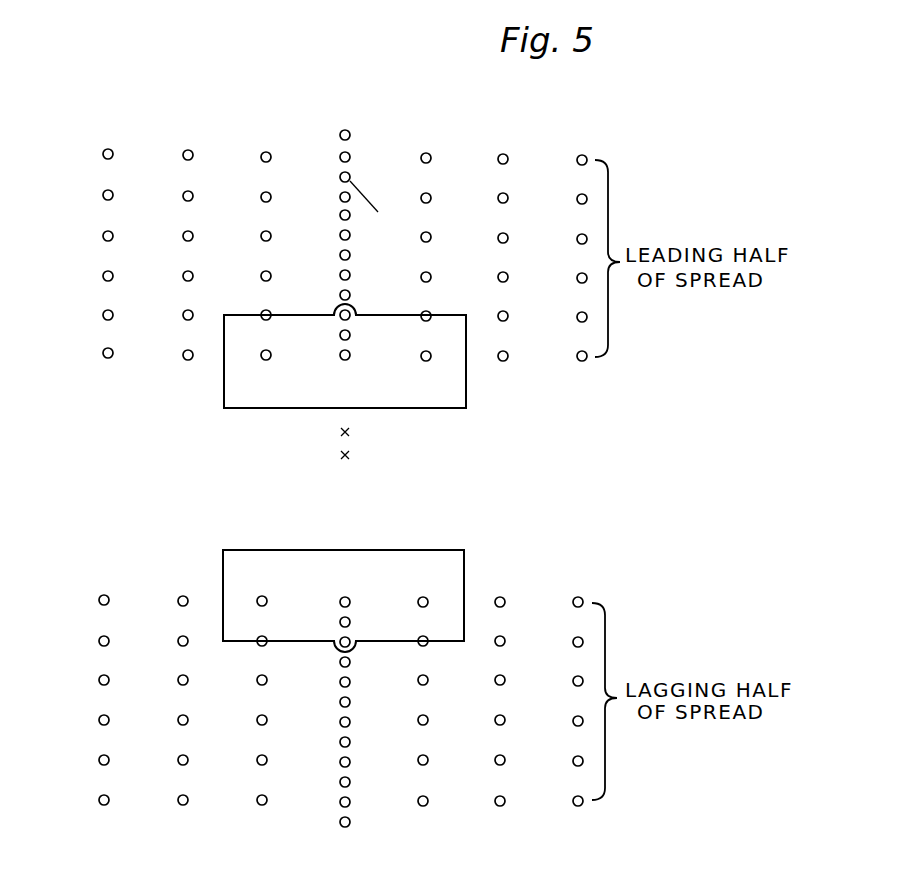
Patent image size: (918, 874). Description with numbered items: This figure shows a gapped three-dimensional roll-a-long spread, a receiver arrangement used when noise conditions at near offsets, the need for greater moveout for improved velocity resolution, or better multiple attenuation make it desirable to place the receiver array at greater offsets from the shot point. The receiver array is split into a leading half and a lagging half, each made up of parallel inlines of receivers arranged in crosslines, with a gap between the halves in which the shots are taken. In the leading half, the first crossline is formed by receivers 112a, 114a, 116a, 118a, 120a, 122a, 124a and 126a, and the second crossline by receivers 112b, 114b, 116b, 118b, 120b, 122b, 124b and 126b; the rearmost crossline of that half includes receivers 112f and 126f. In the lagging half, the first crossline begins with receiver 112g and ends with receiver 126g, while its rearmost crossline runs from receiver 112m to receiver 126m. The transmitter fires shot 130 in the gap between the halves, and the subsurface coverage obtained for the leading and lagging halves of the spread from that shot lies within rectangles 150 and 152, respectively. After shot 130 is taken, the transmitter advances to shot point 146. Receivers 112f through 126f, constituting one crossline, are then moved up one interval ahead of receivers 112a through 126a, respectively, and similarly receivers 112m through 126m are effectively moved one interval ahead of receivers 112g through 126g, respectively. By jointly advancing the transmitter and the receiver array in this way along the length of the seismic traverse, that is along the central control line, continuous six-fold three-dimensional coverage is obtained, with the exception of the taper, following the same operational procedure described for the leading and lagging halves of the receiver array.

The receiver 112a is at (103, 154).
The receiver 112b is at (103, 195).
The receiver 112f is at (104, 356).
The receiver 112g is at (99, 600).
The receiver 112m is at (99, 800).
The receiver 114a is at (183, 155).
The receiver 114b is at (183, 196).
The receiver 116a is at (261, 157).
The receiver 116b is at (261, 197).
The receiver 118a is at (340, 158).
The receiver 118b is at (340, 198).
The receiver 120a is at (343, 130).
The receiver 120b is at (352, 155).
The receiver 122a is at (421, 158).
The receiver 122b is at (421, 198).
The receiver 124a is at (498, 159).
The receiver 124b is at (498, 198).
The receiver 126a is at (577, 160).
The receiver 126b is at (577, 199).
The receiver 126f is at (576, 357).
The receiver 126g is at (573, 601).
The receiver 126m is at (573, 802).
The shot 130 is at (352, 456).
The shot point 146 is at (352, 432).
The rectangle 150 is at (450, 400).
The rectangle 152 is at (443, 557).